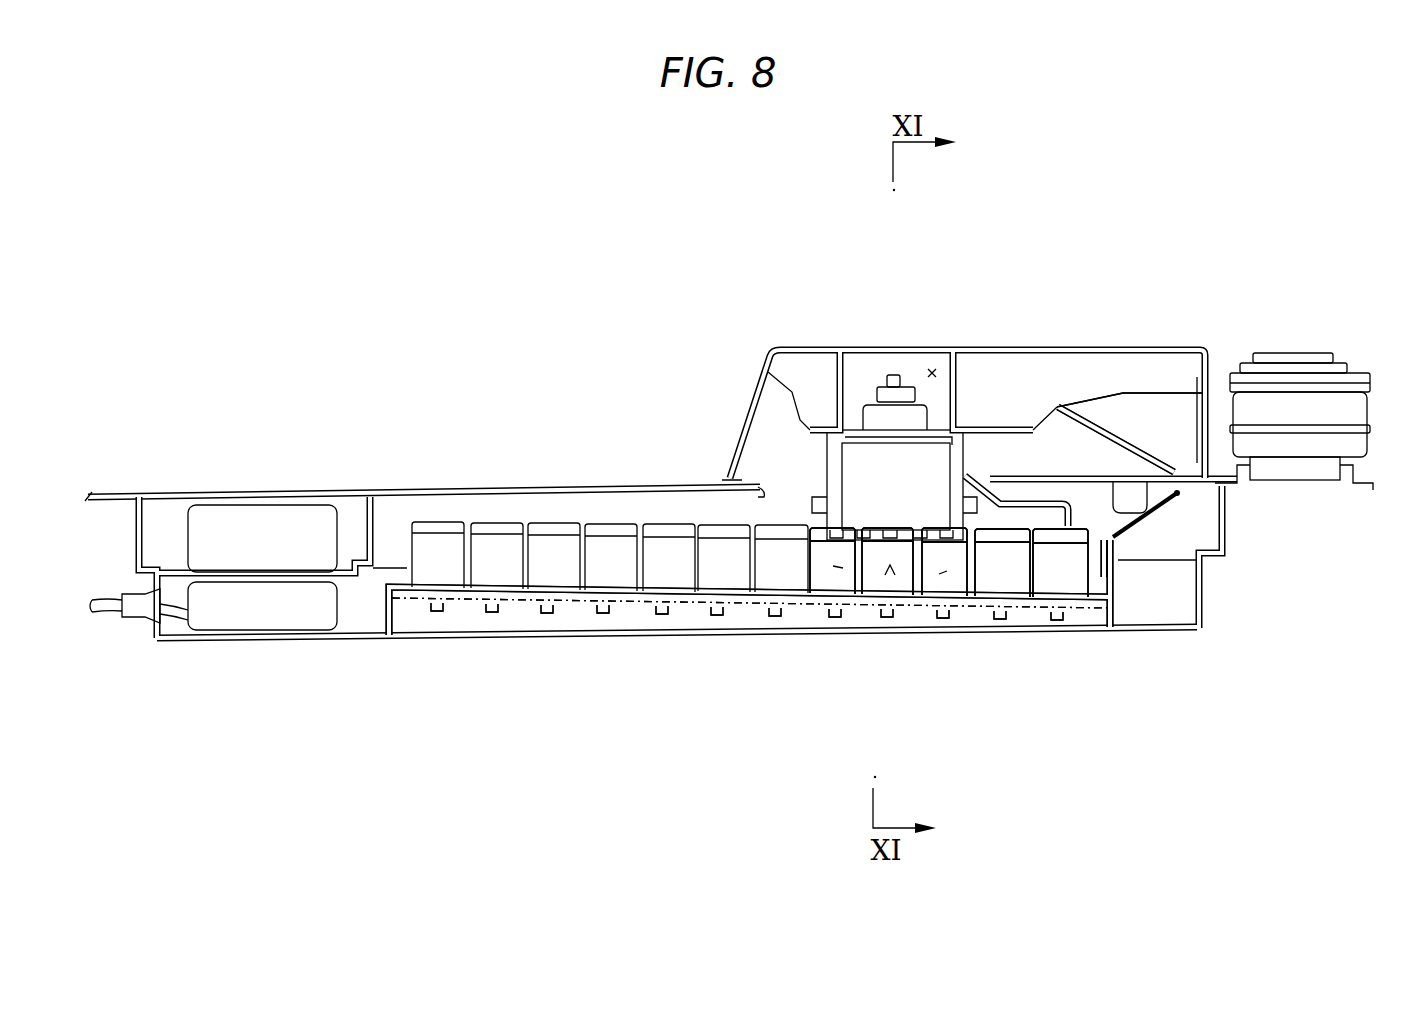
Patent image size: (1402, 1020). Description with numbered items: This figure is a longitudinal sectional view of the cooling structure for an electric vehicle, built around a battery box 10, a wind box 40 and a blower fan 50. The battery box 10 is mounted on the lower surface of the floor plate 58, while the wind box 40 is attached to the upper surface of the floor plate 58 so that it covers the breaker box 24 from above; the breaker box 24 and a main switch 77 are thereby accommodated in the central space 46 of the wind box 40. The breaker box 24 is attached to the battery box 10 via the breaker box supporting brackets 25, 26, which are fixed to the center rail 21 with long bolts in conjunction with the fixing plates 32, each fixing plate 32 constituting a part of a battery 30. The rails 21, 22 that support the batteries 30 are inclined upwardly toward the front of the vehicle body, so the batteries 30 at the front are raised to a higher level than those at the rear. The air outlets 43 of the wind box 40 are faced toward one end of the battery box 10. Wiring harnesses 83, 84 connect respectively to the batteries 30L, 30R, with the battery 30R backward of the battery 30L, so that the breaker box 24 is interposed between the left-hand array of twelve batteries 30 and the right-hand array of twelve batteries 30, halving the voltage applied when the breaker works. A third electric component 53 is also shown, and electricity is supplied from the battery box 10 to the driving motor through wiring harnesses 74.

The battery box 10 is at (733, 634).
The center rail 21 is at (638, 605).
The rail 22 is at (749, 587).
The breaker box 24 is at (879, 470).
The breaker box supporting bracket 25 is at (805, 517).
The breaker box supporting bracket 26 is at (845, 522).
The battery 30 is at (717, 525).
The battery 30L is at (1070, 576).
The battery 30R is at (949, 562).
The fixing plate 32 is at (943, 573).
The wind box 40 is at (1083, 348).
The air outlet 43 is at (1152, 482).
The central space 46 is at (932, 373).
The blower fan 50 is at (1283, 353).
The third electric component 53 is at (288, 633).
The floor plate 58 is at (519, 490).
The wiring harness 74 is at (108, 606).
The main switch 77 is at (892, 373).
The wiring harness 83 is at (1040, 490).
The wiring harness 84 is at (1130, 432).